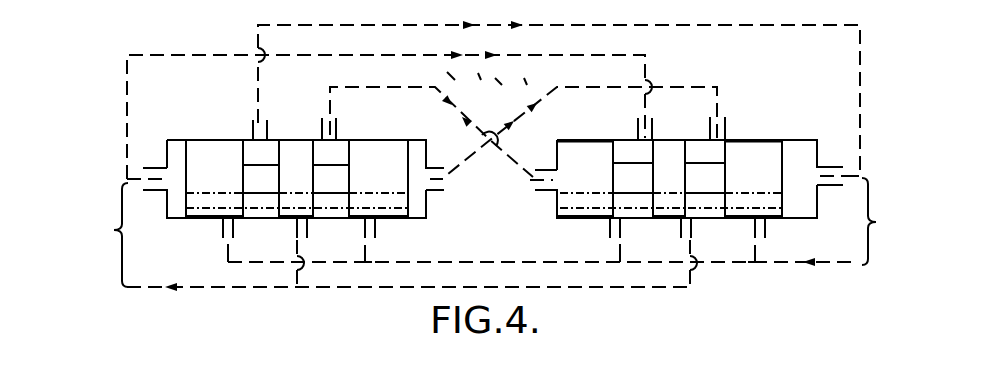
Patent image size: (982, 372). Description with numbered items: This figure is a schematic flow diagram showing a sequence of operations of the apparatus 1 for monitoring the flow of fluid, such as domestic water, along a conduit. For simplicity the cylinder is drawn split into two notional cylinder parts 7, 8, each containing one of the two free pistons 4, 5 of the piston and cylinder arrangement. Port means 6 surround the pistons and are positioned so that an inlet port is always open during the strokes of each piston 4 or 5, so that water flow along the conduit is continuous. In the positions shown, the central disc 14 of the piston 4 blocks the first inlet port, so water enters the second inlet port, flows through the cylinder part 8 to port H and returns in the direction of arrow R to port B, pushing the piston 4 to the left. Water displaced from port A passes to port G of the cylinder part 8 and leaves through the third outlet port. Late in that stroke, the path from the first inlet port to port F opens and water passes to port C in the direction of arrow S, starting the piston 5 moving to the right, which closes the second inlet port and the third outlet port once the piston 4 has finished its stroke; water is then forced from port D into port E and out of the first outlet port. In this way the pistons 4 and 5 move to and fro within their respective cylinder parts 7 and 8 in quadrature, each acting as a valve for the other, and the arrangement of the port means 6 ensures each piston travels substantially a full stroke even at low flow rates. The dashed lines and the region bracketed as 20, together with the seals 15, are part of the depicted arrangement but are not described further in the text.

The apparatus 1 is at (493, 180).
The piston 4 is at (182, 238).
The piston 5 is at (689, 190).
The port means 6 is at (315, 94).
The cylinder part 7 is at (333, 152).
The cylinder part 8 is at (710, 150).
The central disc 14 is at (198, 155).
The seal 15 is at (323, 180).
The return circuit 20 is at (348, 303).